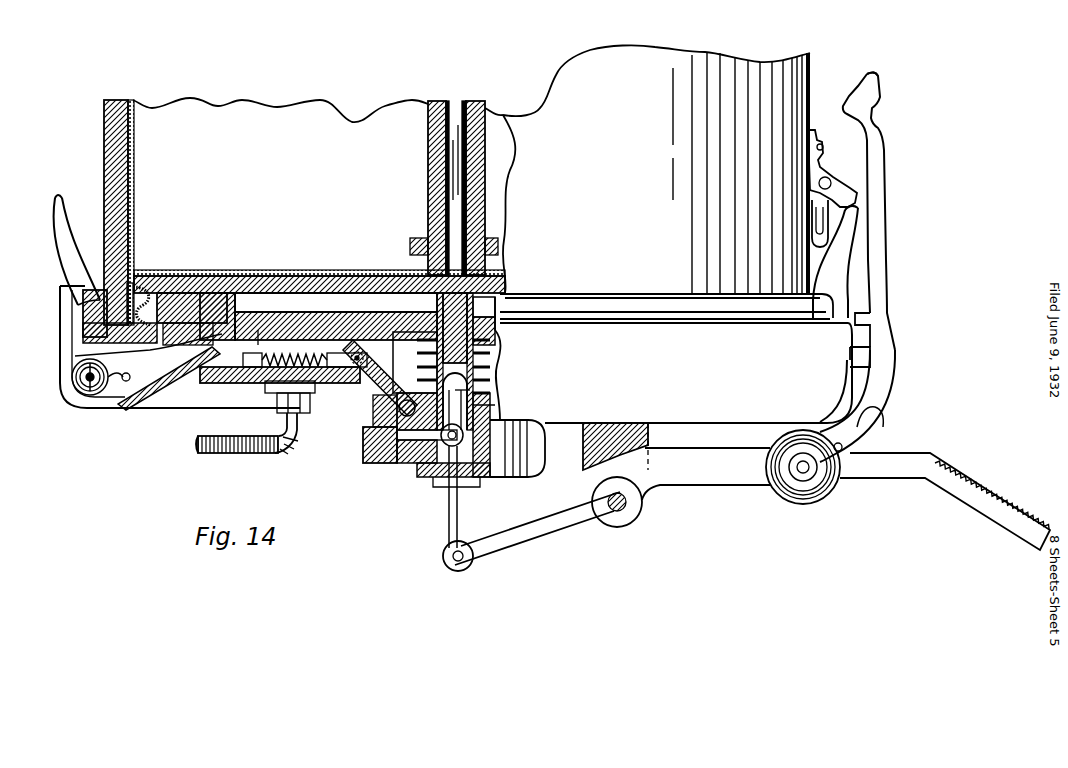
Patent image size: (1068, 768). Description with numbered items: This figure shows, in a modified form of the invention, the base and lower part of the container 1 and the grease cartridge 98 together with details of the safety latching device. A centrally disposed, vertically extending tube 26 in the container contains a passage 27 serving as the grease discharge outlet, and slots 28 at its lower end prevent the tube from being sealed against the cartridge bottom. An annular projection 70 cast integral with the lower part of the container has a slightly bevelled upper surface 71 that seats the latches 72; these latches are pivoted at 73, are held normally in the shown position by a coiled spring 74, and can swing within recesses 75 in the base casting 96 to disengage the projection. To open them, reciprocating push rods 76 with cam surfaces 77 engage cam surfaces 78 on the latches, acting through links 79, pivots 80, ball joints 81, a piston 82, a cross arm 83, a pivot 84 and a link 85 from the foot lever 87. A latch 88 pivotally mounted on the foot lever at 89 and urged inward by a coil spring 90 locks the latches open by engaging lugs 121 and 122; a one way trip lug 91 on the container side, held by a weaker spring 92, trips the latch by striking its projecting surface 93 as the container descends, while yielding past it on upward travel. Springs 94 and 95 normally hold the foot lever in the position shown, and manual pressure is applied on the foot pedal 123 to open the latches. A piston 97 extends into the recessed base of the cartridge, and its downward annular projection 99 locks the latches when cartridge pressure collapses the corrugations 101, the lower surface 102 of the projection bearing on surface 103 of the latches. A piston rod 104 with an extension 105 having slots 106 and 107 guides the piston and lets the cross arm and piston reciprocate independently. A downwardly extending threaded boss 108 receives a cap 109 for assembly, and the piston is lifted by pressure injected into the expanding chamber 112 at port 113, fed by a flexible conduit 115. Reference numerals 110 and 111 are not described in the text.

The container 1 is at (656, 169).
The tube 26 is at (428, 155).
The passage 27 is at (455, 200).
The slots 28 is at (428, 240).
The annular projection 70 is at (612, 300).
The bevelled upper surface 71 is at (70, 280).
The latches 72 is at (70, 250).
The pivot 73 is at (85, 378).
The coiled spring 74 is at (73, 365).
The recesses 75 is at (148, 352).
The push rods 76 is at (240, 375).
The cam surfaces 77 is at (212, 375).
The cam surfaces 78 is at (169, 378).
The links 79 is at (385, 412).
The pivots 80 is at (368, 385).
The ball joints 81 is at (410, 404).
The piston 82 is at (405, 463).
The cross arm 83 is at (425, 465).
The pivot 84 is at (455, 401).
The link 85 is at (452, 497).
The foot lever 87 is at (520, 535).
The latch 88 is at (884, 372).
The pivot 89 is at (800, 468).
The coil spring 90 is at (822, 495).
The one way trip lug 91 is at (845, 183).
The spring 92 is at (830, 228).
The projecting surface 93 is at (862, 90).
The spring 94 is at (300, 420).
The spring 95 is at (490, 375).
The base casting 96 is at (698, 373).
The piston 97 is at (320, 280).
The grease cartridge 98 is at (134, 162).
The downward annular projection 99 is at (190, 275).
The corrugations 101 is at (145, 278).
The lower surface 102 is at (190, 323).
The surface 103 is at (200, 345).
The piston rod 104 is at (475, 312).
The extension 105 is at (498, 360).
The slot 106 is at (470, 388).
The slot 107 is at (495, 405).
The boss 108 is at (375, 458).
The cap 109 is at (500, 460).
The bar 110 is at (432, 320).
The pin 111 is at (258, 330).
The expanding chamber 112 is at (336, 302).
The port 113 is at (290, 345).
The flexible conduit 115 is at (250, 453).
The lug 121 is at (870, 315).
The lug 122 is at (858, 360).
The foot pedal 123 is at (975, 492).